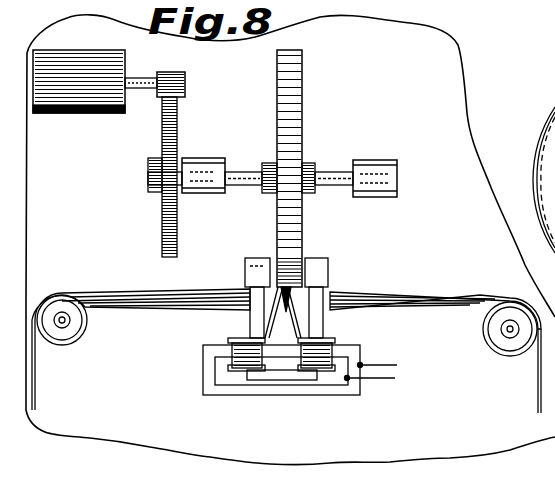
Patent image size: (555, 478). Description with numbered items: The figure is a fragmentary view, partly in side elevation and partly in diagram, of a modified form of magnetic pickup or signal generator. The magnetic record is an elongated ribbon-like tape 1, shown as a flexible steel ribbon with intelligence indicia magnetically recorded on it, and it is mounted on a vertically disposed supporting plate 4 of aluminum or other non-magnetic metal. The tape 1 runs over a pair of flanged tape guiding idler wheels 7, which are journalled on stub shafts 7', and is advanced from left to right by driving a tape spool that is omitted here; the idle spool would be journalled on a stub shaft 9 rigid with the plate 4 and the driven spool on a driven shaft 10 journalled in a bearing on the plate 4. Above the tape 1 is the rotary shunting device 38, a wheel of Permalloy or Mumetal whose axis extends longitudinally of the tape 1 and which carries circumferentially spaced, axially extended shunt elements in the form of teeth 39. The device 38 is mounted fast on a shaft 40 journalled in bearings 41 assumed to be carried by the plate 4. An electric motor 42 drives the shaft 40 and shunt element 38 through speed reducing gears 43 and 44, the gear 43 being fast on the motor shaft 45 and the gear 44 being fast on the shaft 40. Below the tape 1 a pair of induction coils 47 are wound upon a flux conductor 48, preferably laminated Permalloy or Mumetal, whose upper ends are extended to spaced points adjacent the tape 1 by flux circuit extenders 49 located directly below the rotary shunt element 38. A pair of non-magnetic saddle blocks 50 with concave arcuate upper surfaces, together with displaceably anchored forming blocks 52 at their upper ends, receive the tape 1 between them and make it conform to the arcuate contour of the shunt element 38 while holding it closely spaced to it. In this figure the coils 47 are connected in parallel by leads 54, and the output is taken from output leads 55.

The tape 1 is at (35, 390).
The plate 4 is at (86, 188).
The tape guiding idler wheels 7 is at (287, 337).
The stub shafts 7' is at (286, 329).
The stub shaft 9 is at (310, 100).
The driven shaft 10 is at (318, 220).
The rotary shunting device 38 is at (300, 112).
The teeth 39 is at (295, 135).
The shaft 40 is at (328, 172).
The bearings 41 is at (207, 158).
The electric motor 42 is at (120, 52).
The speed reducing gear 43 is at (182, 78).
The speed reducing gear 44 is at (162, 245).
The motor shaft 45 is at (142, 80).
The coils 47 is at (245, 344).
The flux conductor 48 is at (307, 381).
The flux circuit extenders 49 is at (298, 325).
The saddle blocks 50 is at (253, 284).
The forming blocks 52 is at (258, 264).
The leads 54 is at (230, 395).
The output leads 55 is at (362, 364).